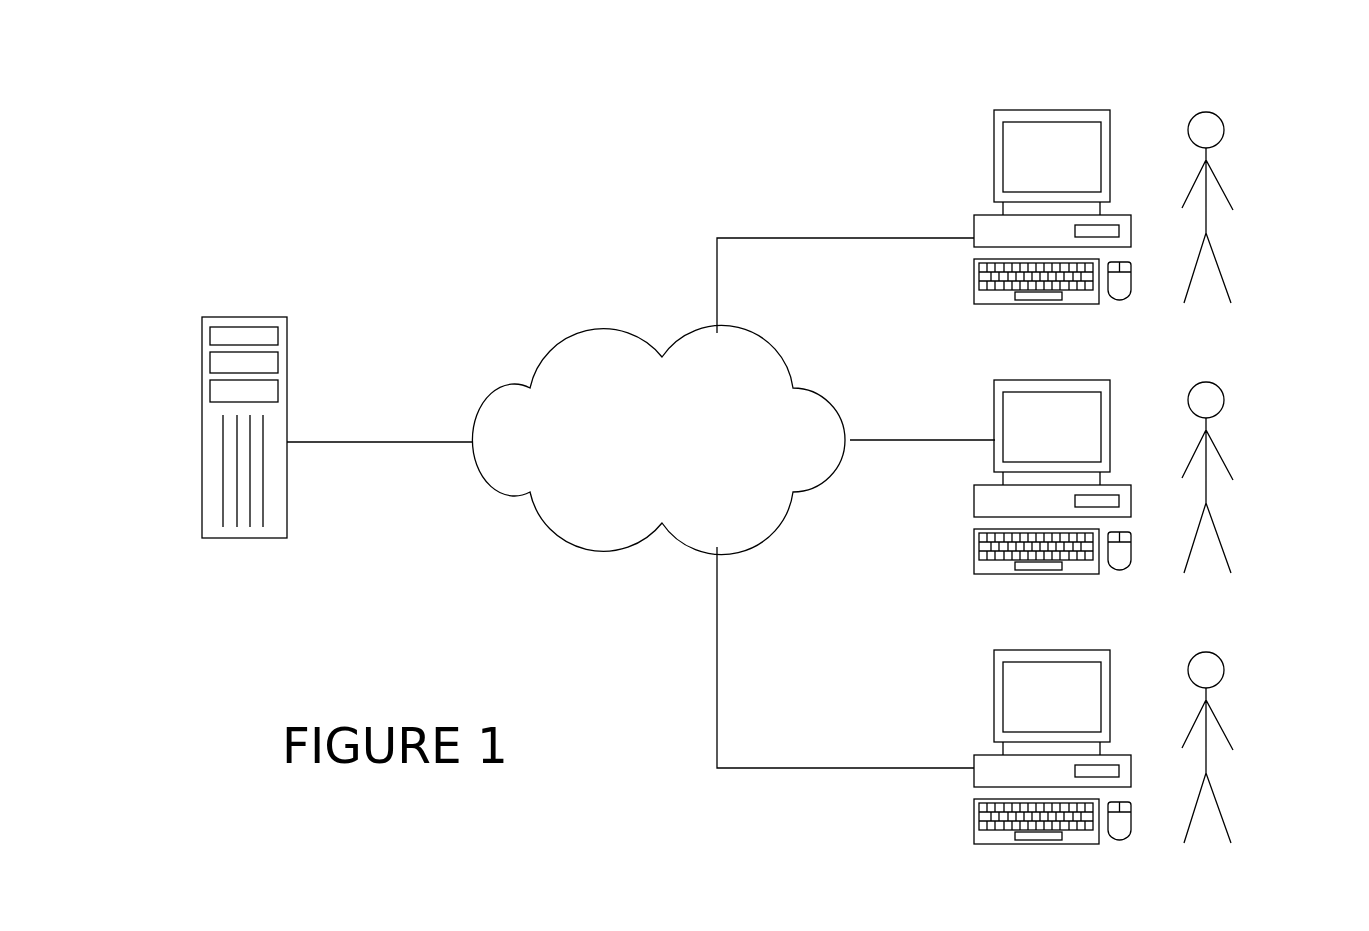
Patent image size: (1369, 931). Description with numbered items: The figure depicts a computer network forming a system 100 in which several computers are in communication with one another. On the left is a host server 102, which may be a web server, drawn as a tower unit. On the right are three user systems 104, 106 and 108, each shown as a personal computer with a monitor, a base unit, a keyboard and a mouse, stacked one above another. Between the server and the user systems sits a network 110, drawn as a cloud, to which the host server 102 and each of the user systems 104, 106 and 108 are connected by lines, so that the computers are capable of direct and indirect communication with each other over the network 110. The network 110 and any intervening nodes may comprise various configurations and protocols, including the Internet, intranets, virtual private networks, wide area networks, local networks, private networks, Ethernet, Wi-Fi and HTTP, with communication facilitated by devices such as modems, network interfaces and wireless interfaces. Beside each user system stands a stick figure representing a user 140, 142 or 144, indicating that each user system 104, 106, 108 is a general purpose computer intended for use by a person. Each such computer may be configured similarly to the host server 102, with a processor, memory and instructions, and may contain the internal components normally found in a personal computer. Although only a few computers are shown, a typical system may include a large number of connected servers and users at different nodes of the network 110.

The system 100 is at (752, 24).
The host server 102 is at (198, 415).
The user system 104 is at (993, 174).
The user system 106 is at (995, 425).
The user system 108 is at (995, 695).
The network 110 is at (607, 335).
The user 140 is at (1207, 208).
The user 142 is at (1207, 478).
The user 144 is at (1207, 748).